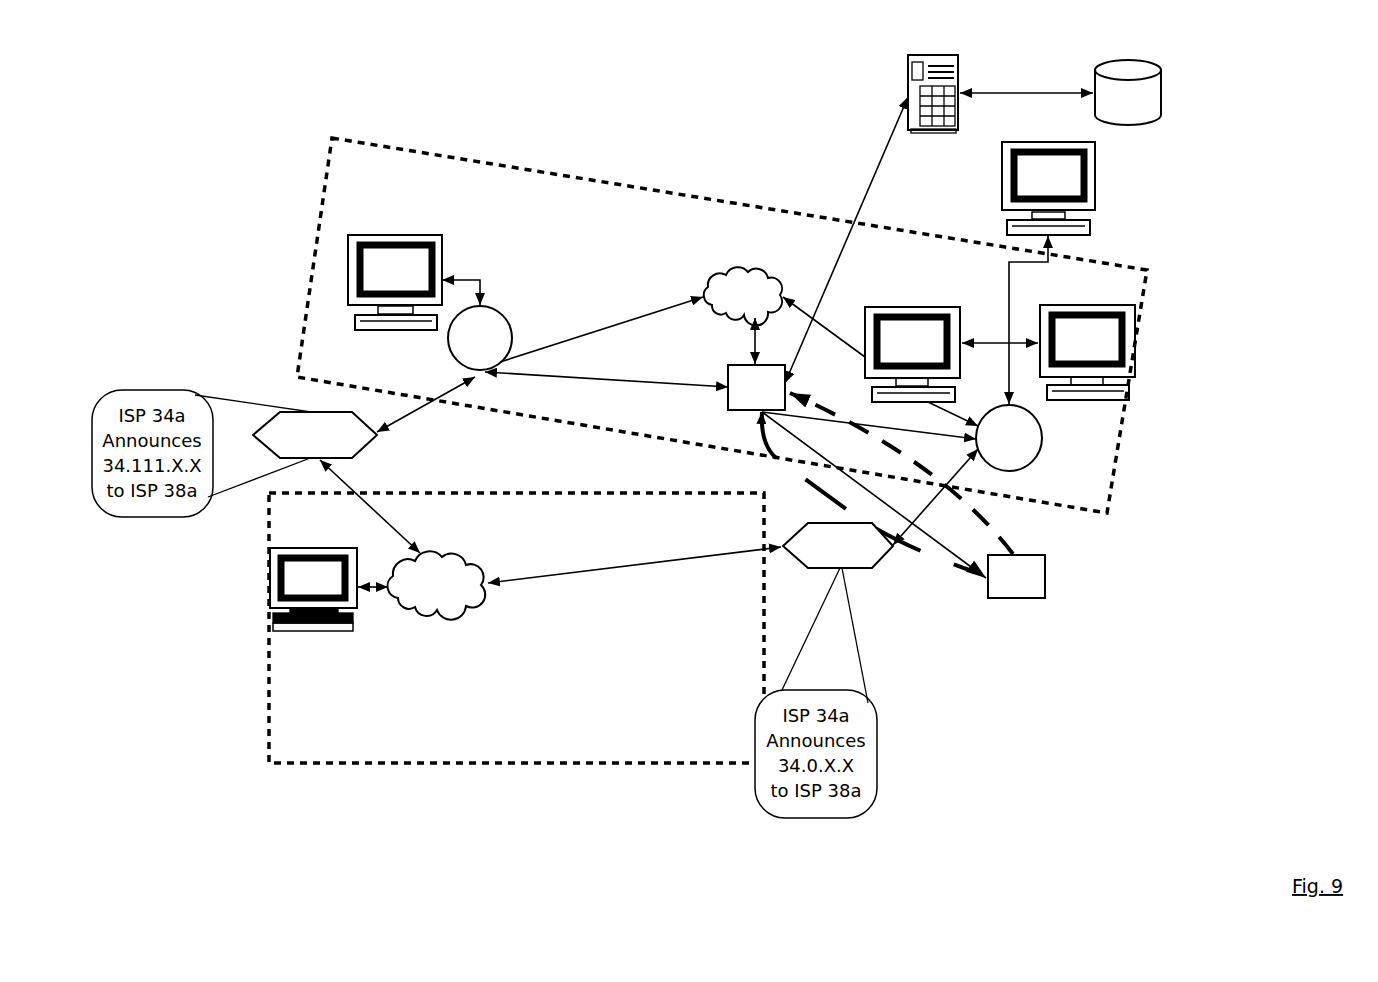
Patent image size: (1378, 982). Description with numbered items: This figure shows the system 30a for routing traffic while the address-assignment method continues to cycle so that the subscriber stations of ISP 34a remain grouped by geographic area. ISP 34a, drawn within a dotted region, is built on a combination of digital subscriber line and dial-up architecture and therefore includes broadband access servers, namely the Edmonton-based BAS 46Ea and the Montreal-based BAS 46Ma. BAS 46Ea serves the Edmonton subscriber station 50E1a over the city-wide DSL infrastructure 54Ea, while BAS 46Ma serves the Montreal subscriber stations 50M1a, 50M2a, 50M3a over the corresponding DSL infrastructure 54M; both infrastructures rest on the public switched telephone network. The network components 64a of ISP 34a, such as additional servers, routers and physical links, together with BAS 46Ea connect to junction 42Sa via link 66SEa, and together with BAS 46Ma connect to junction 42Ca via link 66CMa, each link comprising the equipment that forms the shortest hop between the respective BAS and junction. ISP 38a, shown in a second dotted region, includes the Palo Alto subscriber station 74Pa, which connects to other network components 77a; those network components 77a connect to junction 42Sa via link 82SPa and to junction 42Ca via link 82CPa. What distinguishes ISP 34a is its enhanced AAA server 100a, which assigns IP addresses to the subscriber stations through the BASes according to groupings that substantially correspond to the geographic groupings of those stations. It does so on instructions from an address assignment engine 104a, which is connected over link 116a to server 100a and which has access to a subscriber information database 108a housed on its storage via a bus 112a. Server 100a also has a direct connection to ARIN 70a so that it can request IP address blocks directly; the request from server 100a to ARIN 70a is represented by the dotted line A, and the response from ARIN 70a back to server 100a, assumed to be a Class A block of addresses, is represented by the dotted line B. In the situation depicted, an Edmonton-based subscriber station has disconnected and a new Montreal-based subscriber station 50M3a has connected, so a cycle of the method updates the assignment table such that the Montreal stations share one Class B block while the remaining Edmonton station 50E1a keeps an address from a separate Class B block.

The system for routing traffic 30a is at (200, 774).
The ISP 34a is at (293, 374).
The ISP 38a is at (267, 668).
The junction 42Sa is at (315, 435).
The junction 42Ca is at (838, 545).
The broadband access server 46Ea is at (480, 338).
The broadband access server 46Ma is at (902, 436).
The subscriber station 50E1a is at (394, 272).
The subscriber station 50M1a is at (912, 344).
The subscriber station 50M2a is at (1087, 343).
The subscriber station 50M3a is at (1048, 175).
The city-wide DSL infrastructure 54Ea is at (478, 268).
The city-wide DSL infrastructure 54M is at (1006, 340).
The network components 64a is at (657, 377).
The link 66SEa is at (420, 411).
The link 66CMa is at (944, 488).
The ARIN 70a is at (903, 505).
The subscriber station 74Pa is at (313, 589).
The network components 77a is at (421, 585).
The link 82SPa is at (400, 531).
The link 82CPa is at (552, 575).
The enhanced AAA server 100a is at (756, 387).
The address assignment engine 104a is at (957, 53).
The subscriber information database 108a is at (1123, 58).
The bus 112a is at (1036, 90).
The link 116a is at (852, 196).
The request A is at (925, 558).
The response B is at (992, 515).